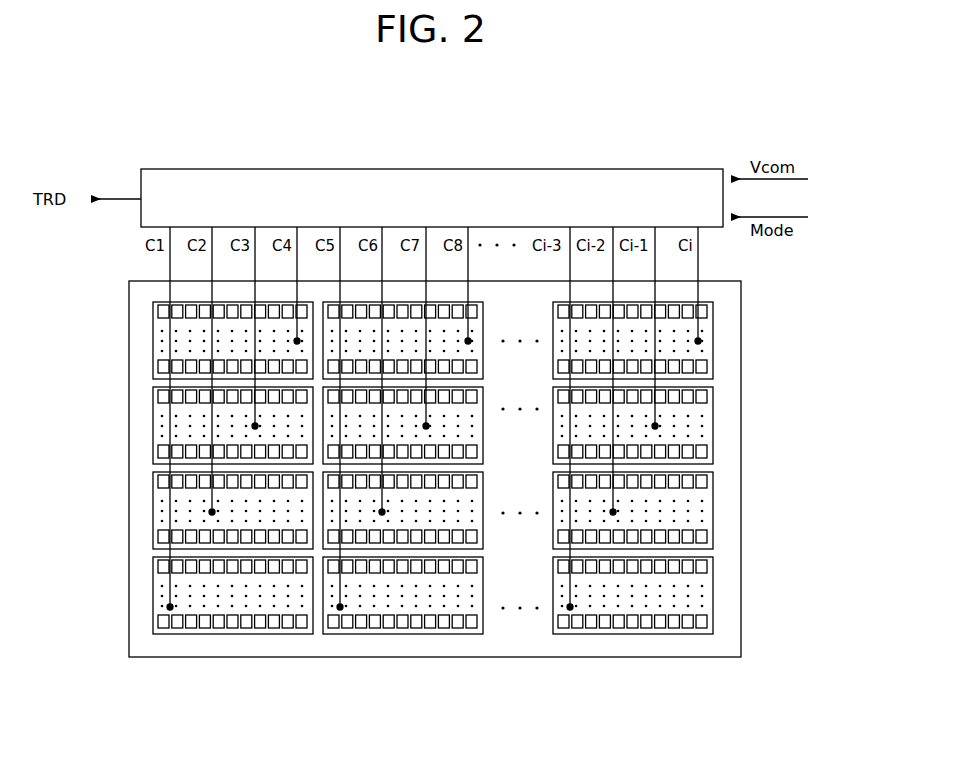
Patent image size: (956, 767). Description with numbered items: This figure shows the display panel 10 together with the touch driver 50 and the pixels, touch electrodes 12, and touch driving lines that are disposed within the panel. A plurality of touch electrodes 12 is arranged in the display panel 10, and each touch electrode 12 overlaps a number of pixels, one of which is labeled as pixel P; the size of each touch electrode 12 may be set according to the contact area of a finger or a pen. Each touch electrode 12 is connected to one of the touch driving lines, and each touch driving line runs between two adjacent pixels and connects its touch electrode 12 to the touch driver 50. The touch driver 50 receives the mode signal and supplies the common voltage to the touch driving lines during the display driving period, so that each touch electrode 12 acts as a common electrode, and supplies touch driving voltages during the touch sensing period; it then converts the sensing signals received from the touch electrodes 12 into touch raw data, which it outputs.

The touch driver 50 is at (609, 168).
The display panel 10 is at (741, 469).
The touch electrode 12 is at (713, 330).
The pixel P is at (158, 317).